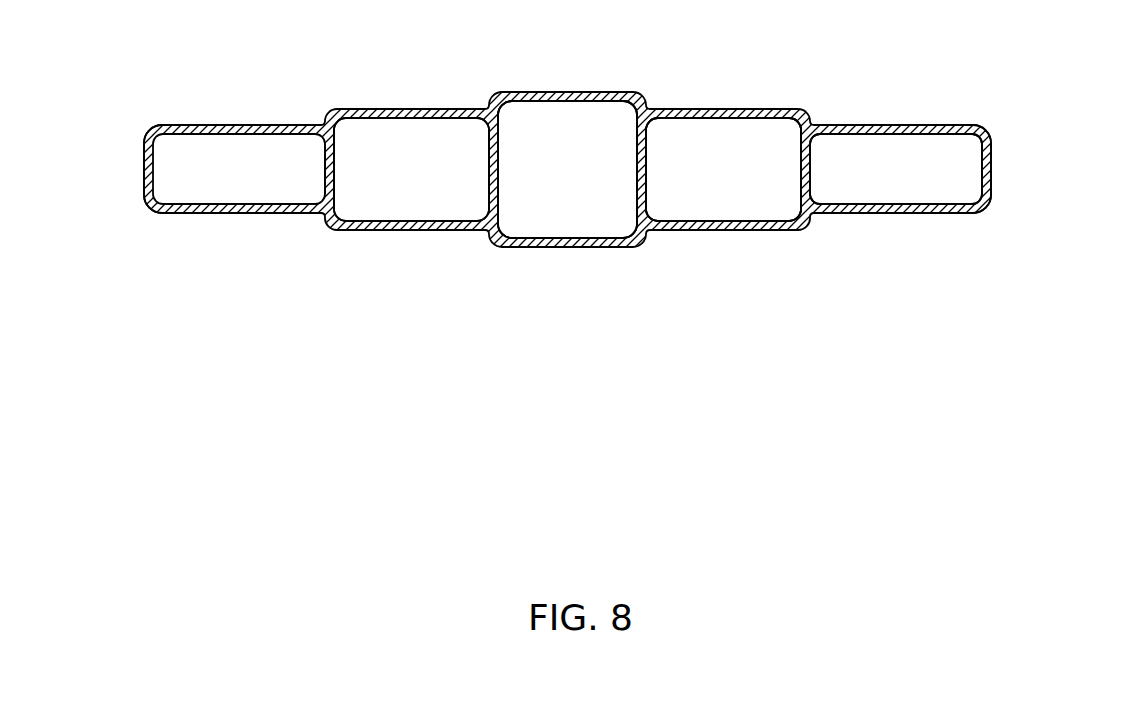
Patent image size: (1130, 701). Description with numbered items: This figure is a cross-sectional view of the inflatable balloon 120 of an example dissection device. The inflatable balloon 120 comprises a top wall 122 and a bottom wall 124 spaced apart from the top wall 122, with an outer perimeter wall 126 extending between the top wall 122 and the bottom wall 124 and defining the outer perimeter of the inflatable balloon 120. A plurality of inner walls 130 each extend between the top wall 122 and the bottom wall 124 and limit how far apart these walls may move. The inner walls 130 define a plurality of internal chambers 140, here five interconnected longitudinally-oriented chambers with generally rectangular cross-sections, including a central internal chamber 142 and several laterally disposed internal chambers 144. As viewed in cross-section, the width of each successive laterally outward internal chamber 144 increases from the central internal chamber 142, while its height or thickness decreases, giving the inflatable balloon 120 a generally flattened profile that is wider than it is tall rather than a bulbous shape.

The inflatable balloon 120 is at (1012, 49).
The top wall 122 is at (568, 92).
The bottom wall 124 is at (602, 247).
The outer perimeter wall 126 is at (145, 168).
The inner walls 130 is at (336, 167).
The internal chambers 140 is at (539, 117).
The central internal chamber 142 is at (526, 223).
The laterally disposed internal chambers 144 is at (405, 207).